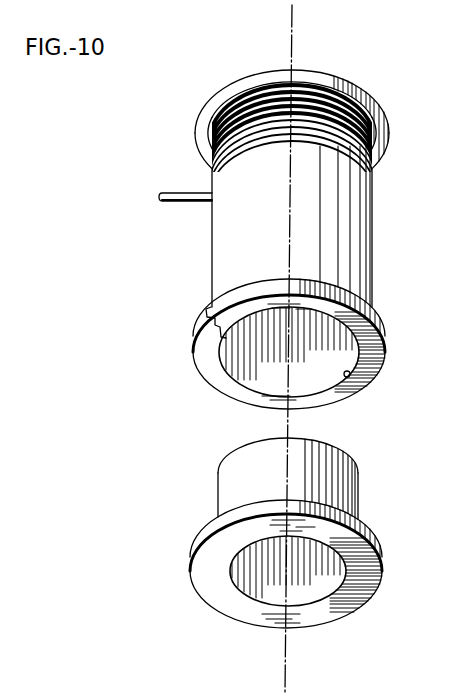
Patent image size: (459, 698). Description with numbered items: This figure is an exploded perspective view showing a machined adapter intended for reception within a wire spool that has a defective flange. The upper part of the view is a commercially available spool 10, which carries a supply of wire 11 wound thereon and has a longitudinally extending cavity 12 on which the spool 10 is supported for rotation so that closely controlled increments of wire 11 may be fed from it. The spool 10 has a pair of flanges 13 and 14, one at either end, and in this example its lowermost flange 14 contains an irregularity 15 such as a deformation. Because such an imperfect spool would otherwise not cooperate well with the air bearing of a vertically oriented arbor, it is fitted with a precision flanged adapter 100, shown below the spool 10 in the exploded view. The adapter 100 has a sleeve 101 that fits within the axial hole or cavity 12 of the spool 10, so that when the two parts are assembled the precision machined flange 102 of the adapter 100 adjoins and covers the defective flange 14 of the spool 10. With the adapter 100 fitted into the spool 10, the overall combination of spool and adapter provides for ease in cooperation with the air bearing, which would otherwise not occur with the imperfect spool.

The spool 10 is at (384, 241).
The wire 11 is at (182, 193).
The cavity 12 is at (350, 377).
The flange 13 is at (380, 106).
The flange 14 is at (386, 349).
The irregularity 15 is at (213, 333).
The precision flanged adapter 100 is at (209, 509).
The sleeve 101 is at (358, 479).
The precision machined flange 102 is at (352, 606).